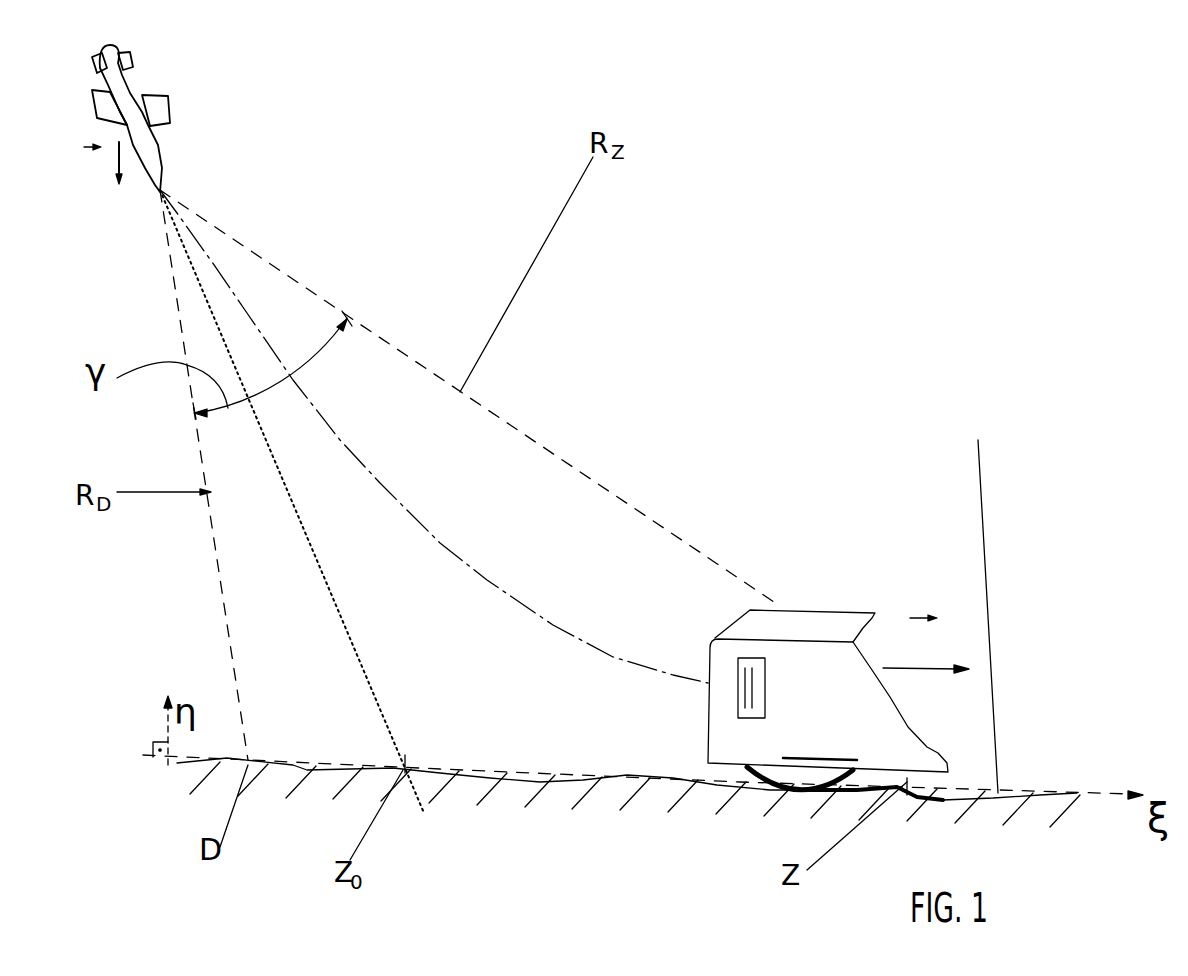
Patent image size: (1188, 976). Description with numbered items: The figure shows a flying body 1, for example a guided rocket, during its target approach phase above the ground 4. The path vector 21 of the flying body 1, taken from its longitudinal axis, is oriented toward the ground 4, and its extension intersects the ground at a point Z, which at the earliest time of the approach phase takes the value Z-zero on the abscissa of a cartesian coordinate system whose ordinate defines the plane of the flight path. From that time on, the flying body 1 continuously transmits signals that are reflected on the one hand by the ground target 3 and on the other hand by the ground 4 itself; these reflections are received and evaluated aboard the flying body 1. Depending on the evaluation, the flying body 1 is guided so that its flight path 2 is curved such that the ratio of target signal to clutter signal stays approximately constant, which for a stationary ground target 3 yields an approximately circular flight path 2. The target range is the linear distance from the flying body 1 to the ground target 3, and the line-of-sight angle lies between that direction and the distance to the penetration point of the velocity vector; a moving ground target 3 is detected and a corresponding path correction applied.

The flying body 1 is at (155, 163).
The flight path 2 is at (460, 557).
The ground target 3 is at (813, 627).
The ground 4 is at (983, 598).
The path vector 21 is at (298, 520).